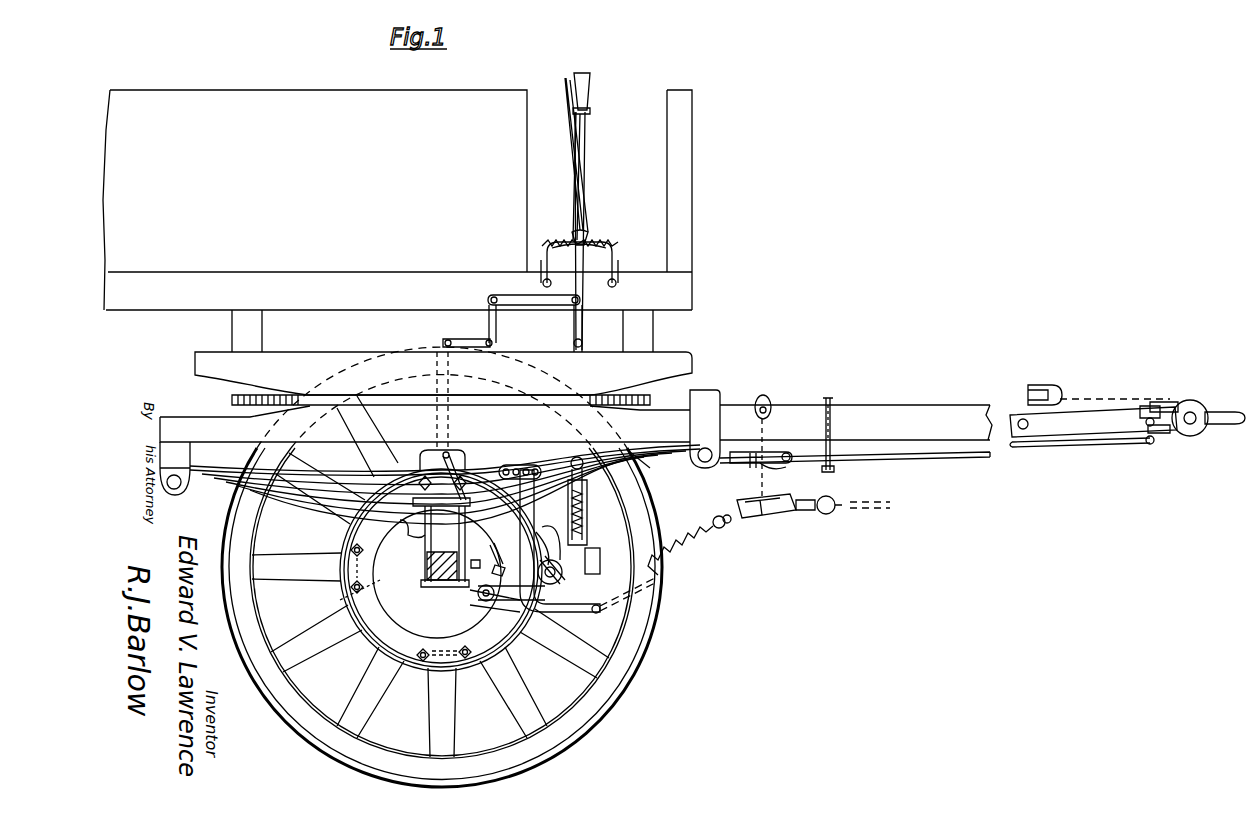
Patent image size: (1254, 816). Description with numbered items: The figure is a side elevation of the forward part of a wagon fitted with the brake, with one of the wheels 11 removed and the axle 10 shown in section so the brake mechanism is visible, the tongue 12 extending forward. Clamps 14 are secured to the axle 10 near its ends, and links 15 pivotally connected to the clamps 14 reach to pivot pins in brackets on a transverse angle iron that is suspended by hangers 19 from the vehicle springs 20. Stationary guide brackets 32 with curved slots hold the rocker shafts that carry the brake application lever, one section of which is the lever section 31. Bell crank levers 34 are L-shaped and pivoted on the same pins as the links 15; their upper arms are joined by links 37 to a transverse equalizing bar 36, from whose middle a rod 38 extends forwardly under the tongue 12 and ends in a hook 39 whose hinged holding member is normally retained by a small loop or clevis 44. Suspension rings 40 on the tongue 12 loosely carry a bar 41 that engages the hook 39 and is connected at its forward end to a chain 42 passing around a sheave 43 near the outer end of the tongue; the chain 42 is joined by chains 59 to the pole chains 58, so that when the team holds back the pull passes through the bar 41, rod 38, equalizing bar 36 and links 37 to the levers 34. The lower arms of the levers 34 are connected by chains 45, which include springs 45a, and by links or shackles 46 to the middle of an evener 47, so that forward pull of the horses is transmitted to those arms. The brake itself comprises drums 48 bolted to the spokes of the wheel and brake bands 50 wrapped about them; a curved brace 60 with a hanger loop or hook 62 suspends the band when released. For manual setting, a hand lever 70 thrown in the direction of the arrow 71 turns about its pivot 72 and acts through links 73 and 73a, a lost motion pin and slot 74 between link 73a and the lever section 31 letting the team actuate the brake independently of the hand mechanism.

The axle 10 is at (440, 588).
The wheels 11 is at (640, 636).
The tongue 12 is at (870, 410).
The clamps 14 is at (485, 606).
The links 15 is at (445, 553).
The hangers 19 is at (586, 520).
The vehicle springs 20 is at (648, 472).
The lever section 31 is at (511, 581).
The stationary guide brackets 32 is at (600, 550).
The bell crank levers 34 is at (549, 534).
The equalizing bar 36 is at (556, 470).
The links 37 is at (520, 460).
The rod 38 is at (702, 470).
The hook 39 is at (786, 468).
The suspension rings 40 is at (836, 468).
The bar 41 is at (975, 456).
The chain 42 is at (1178, 405).
The sheave 43 is at (1205, 410).
The loop or clevis 44 is at (752, 467).
The chains 45 is at (698, 538).
The springs 45a is at (649, 594).
The links or shackles 46 is at (757, 520).
The evener 47 is at (790, 515).
The drums 48 is at (430, 576).
The brake bands 50 is at (345, 595).
The pole chains 58 is at (1155, 410).
The chains 59 is at (1148, 406).
The curved brace 60 is at (470, 468).
The hanger loop or hook 62 is at (448, 445).
The hand lever 70 is at (584, 122).
The arrow 71 is at (540, 70).
The pivot 72 is at (583, 347).
The link 73 is at (536, 300).
The link 73a is at (474, 567).
The pin and slot 74 is at (501, 547).